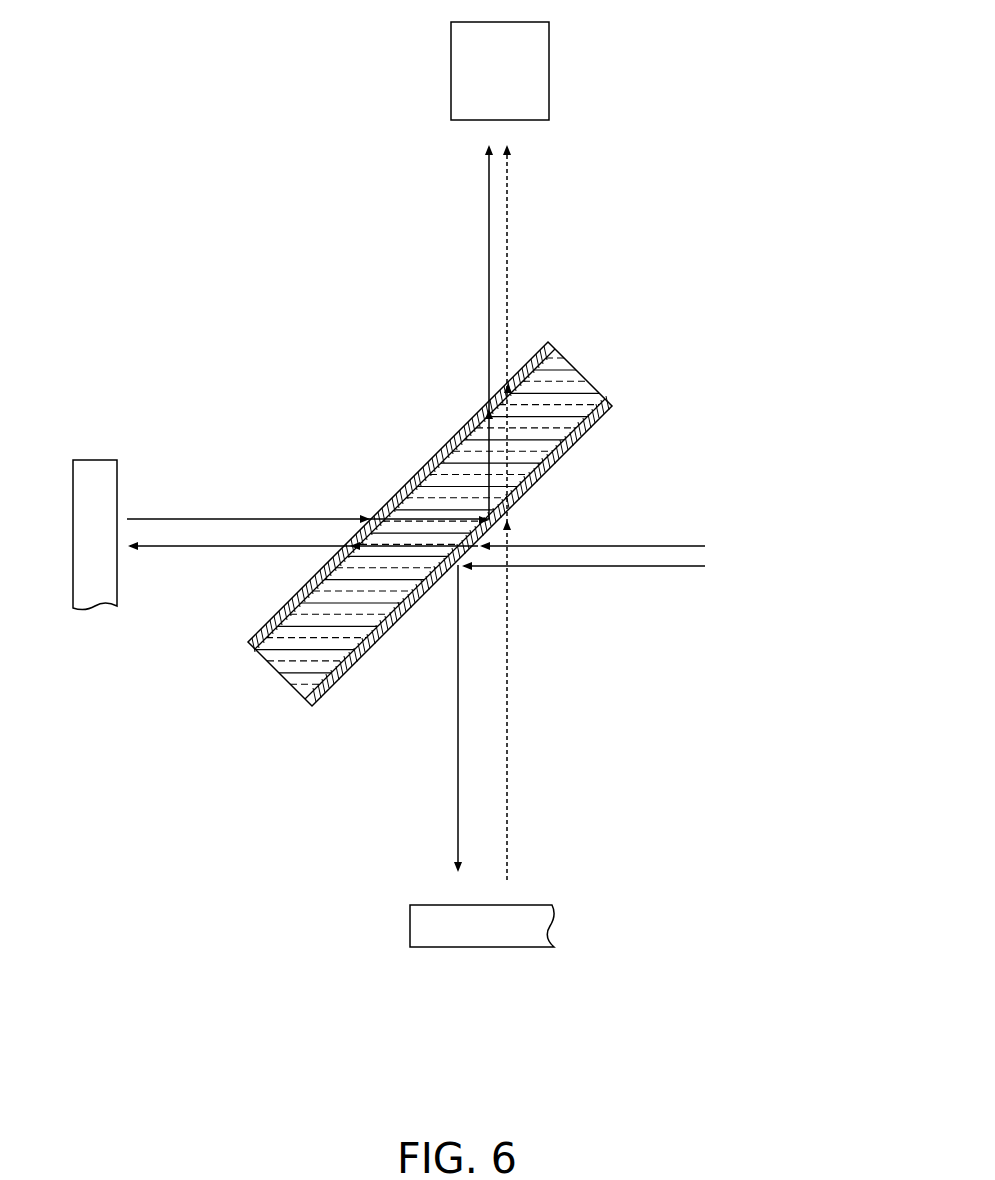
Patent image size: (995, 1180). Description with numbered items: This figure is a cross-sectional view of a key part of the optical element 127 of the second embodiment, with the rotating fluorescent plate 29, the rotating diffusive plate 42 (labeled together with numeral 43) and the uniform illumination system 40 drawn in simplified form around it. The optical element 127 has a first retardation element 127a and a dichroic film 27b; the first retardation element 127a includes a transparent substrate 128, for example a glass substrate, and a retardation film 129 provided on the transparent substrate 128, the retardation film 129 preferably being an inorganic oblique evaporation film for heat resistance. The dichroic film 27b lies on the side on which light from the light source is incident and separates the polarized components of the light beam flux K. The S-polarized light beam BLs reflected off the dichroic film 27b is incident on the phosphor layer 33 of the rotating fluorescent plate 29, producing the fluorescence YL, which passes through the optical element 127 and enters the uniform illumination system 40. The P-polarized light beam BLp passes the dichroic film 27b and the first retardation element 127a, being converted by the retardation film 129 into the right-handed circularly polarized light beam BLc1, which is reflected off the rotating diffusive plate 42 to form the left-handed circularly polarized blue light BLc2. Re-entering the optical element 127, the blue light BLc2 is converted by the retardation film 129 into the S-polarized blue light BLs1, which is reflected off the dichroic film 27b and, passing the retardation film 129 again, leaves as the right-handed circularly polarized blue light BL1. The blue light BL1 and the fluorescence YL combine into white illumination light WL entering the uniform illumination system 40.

The uniform illumination system 40 is at (549, 50).
The optical element 127 is at (522, 398).
The first retardation element 127a is at (459, 450).
The transparent substrate 128 is at (566, 376).
The retardation film 129 is at (536, 345).
The dichroic film 27b is at (612, 405).
The diffuse reflection element 43 is at (116, 500).
The rotating diffusive plate 42 is at (100, 473).
The phosphor layer 33 is at (482, 962).
The rotating fluorescent plate 29 is at (477, 930).
The white illumination light WL is at (458, 512).
The right-handed circularly polarized blue light BL1 is at (489, 178).
The fluorescence YL is at (507, 230).
The right-handed circularly polarized light beam BLc1 is at (212, 548).
The left-handed circularly polarized blue light BLc2 is at (250, 518).
The S-polarized blue light BLs1 is at (427, 520).
The P-polarized light beam BLp is at (683, 548).
The S-polarized light beam BLs is at (683, 566).
The light beam flux K is at (595, 688).